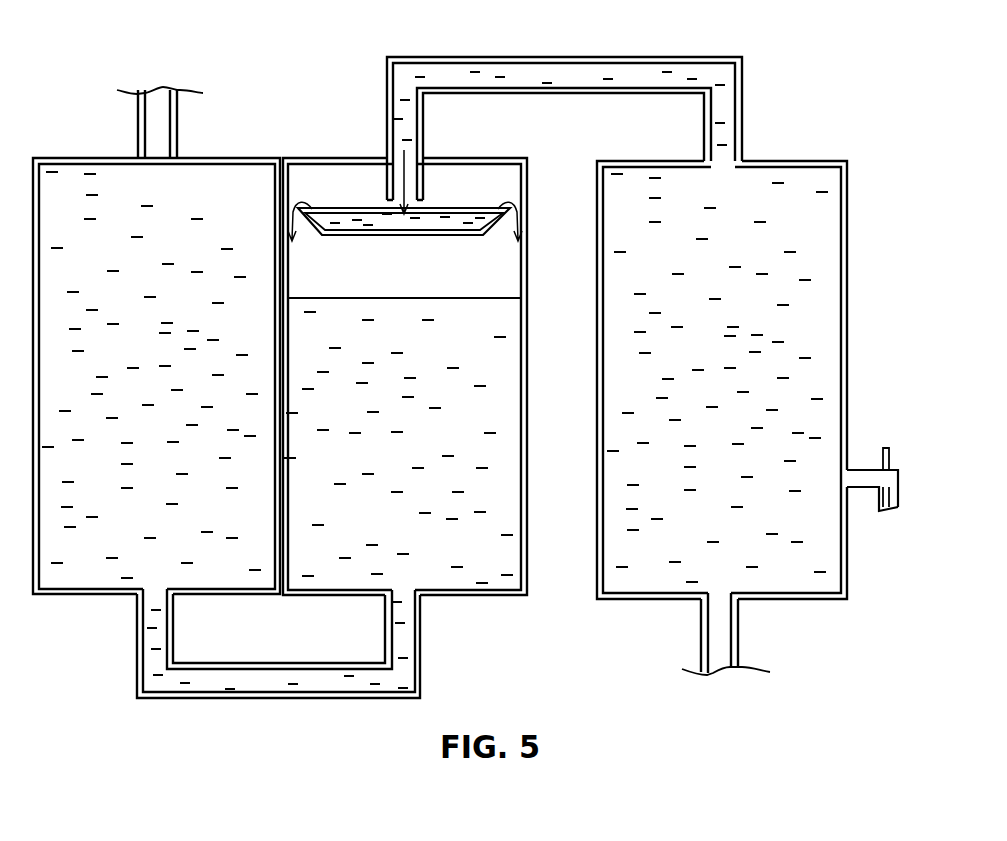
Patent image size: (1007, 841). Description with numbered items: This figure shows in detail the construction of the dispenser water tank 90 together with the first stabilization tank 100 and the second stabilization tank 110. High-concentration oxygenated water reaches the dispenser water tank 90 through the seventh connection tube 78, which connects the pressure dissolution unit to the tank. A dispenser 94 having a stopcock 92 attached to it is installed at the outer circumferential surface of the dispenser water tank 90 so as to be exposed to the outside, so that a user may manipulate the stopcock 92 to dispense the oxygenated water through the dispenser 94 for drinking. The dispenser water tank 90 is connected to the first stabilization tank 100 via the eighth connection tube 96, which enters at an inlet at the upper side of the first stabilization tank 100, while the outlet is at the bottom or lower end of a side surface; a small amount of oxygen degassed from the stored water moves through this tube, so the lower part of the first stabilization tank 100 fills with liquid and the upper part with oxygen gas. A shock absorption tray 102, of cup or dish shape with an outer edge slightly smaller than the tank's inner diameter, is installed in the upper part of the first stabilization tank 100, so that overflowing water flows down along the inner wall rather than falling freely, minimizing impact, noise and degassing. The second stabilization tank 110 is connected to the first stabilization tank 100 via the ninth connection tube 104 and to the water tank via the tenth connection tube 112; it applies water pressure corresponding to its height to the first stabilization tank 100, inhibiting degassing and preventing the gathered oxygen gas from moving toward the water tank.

The seventh connection tube 78 is at (732, 640).
The dispenser water tank 90 is at (778, 178).
The stopcock 92 is at (890, 448).
The dispenser 94 is at (896, 512).
The eighth connection tube 96 is at (742, 72).
The first stabilization tank 100 is at (458, 178).
The shock absorption tray 102 is at (430, 224).
The ninth connection tube 104 is at (415, 645).
The second stabilization tank 110 is at (212, 178).
The tenth connection tube 112 is at (138, 130).